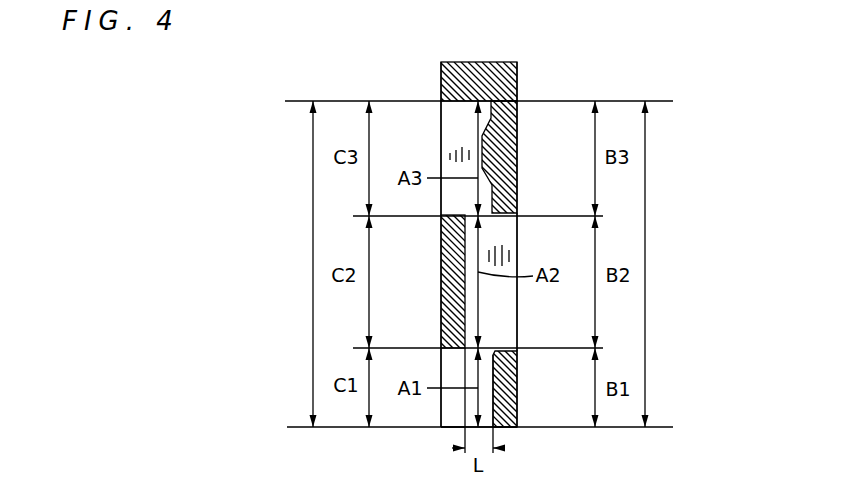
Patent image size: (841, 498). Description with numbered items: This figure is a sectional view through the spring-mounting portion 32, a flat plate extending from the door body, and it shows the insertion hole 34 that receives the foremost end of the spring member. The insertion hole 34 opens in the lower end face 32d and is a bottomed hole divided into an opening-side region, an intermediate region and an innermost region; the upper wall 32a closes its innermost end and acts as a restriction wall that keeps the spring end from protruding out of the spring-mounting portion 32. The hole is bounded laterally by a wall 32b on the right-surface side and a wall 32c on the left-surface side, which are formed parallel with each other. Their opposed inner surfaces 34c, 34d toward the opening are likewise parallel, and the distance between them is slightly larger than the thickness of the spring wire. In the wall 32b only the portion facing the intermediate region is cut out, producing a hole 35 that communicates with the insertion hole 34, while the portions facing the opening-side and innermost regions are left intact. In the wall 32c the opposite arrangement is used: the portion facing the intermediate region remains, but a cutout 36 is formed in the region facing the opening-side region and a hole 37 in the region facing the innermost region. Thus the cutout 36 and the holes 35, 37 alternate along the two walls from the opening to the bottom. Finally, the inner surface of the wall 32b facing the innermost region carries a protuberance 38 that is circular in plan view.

The spring-mounting portion 32 is at (318, 82).
The upper wall 32a is at (443, 64).
The wall on one-surface side 32b is at (666, 264).
The wall on other-surface side 32c is at (290, 264).
The lower end face 32d is at (452, 429).
The insertion hole 34 is at (484, 430).
The inner surface 34c is at (492, 372).
The inner surface 34d is at (466, 300).
The hole 35 is at (519, 241).
The cutout 36 is at (440, 410).
The hole 37 is at (440, 149).
The protuberance 38 is at (482, 141).